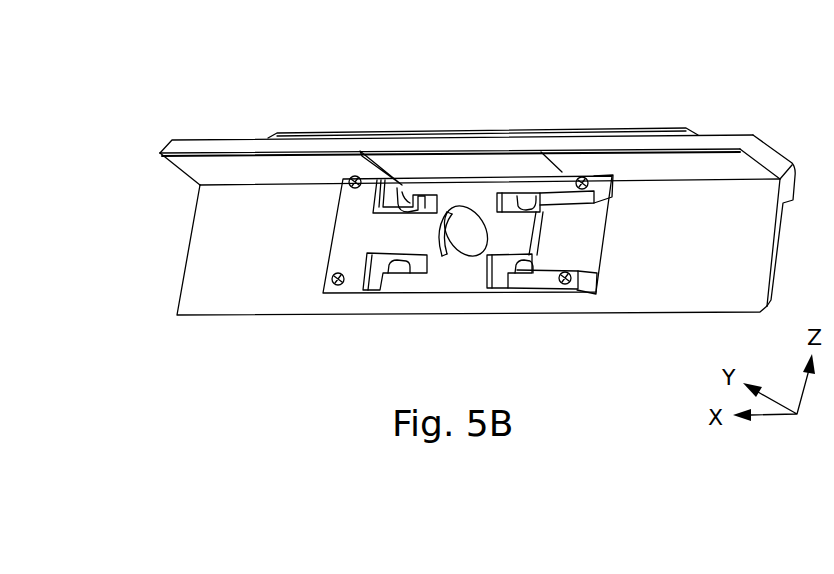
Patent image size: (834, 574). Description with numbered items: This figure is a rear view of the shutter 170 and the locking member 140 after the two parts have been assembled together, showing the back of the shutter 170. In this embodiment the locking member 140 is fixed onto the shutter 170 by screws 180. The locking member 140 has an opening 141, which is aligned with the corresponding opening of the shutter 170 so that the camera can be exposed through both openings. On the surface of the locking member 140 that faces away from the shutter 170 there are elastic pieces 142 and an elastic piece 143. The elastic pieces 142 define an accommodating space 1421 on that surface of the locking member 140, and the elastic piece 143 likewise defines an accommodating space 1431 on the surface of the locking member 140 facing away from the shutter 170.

The locking member 140 is at (353, 286).
The opening 141 is at (452, 272).
The elastic piece 142 is at (397, 192).
The accommodating space 1421 is at (408, 172).
The elastic piece 143 is at (532, 204).
The accommodating space 1431 is at (490, 172).
The shutter 170 is at (763, 150).
The screw 180 is at (338, 288).